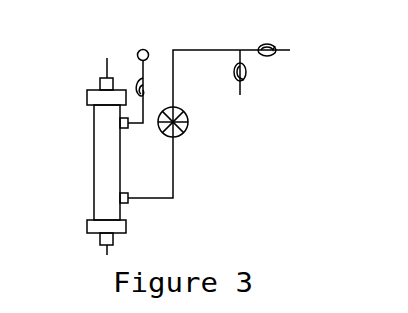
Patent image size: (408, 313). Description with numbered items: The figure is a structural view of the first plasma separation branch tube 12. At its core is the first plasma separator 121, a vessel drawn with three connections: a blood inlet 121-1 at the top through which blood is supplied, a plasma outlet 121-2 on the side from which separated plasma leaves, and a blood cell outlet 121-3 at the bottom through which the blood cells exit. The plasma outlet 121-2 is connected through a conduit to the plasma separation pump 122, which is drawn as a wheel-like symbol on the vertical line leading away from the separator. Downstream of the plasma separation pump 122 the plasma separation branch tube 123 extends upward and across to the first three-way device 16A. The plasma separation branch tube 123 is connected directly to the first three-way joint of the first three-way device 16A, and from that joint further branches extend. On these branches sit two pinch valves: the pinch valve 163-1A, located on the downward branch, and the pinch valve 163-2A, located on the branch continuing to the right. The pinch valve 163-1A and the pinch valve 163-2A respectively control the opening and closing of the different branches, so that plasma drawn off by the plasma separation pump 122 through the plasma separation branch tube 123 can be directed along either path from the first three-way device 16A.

The first plasma separation branch tube 12 is at (233, 168).
The first plasma separator 121 is at (108, 192).
The blood inlet 121-1 is at (103, 78).
The plasma outlet 121-2 is at (130, 198).
The blood cell outlet 121-3 is at (105, 248).
The plasma separation pump 122 is at (178, 134).
The plasma separation branch tube 123 is at (190, 52).
The first three-way device 16A is at (240, 50).
The pinch valve 163-1A is at (243, 75).
The pinch valve 163-2A is at (267, 48).